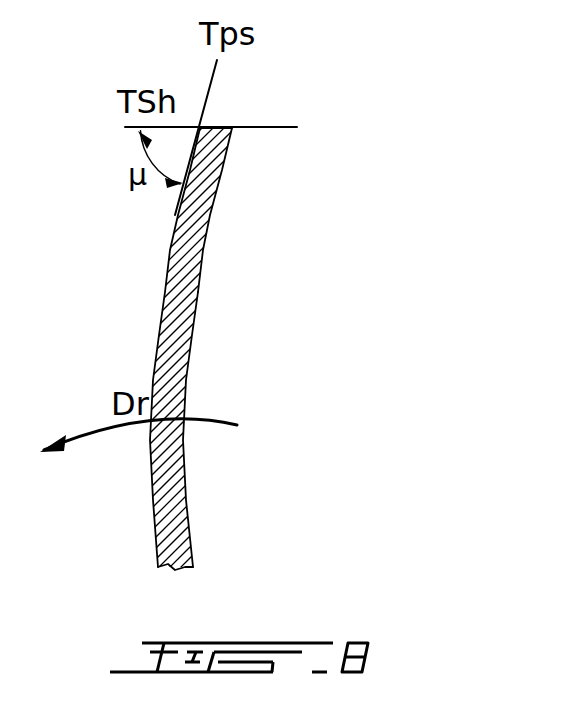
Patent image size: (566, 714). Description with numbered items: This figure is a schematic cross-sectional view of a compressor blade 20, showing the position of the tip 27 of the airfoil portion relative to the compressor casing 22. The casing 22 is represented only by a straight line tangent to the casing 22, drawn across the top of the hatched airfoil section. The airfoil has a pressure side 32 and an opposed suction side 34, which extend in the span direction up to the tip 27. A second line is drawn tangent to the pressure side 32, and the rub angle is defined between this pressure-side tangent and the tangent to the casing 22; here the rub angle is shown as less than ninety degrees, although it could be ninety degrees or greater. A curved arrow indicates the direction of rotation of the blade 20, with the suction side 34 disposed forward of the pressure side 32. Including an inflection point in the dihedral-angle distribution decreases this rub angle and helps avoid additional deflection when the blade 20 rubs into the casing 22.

The blade 20 is at (372, 242).
The compressor casing 22 is at (224, 127).
The tip 27 is at (228, 147).
The pressure side 32 is at (165, 292).
The suction side 34 is at (192, 330).